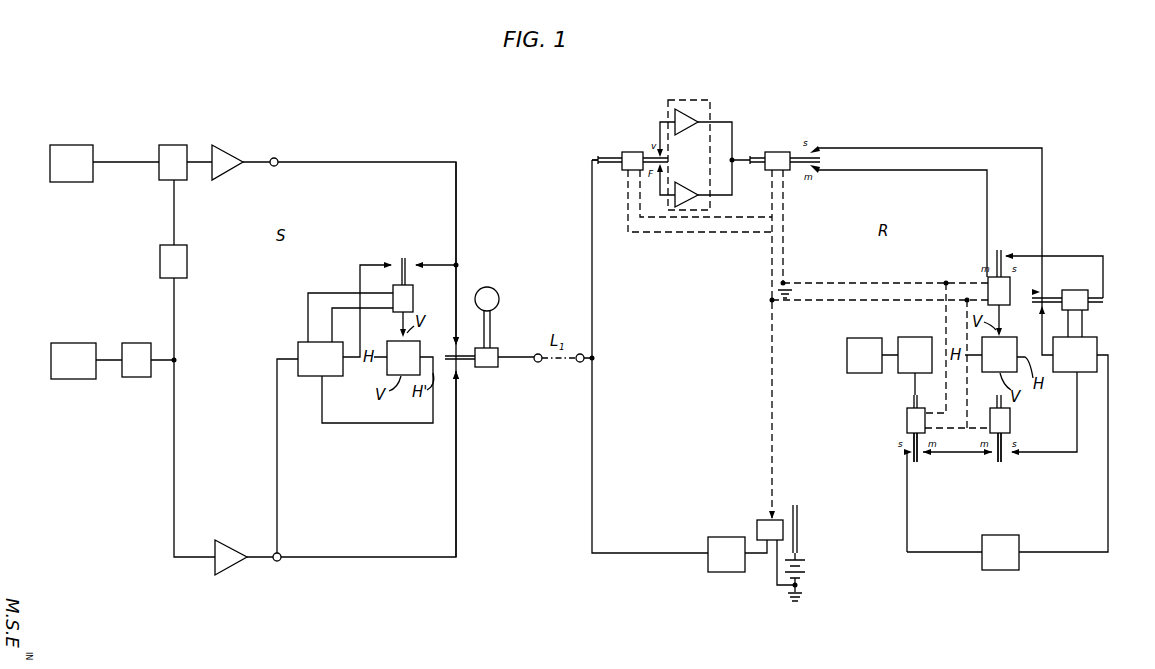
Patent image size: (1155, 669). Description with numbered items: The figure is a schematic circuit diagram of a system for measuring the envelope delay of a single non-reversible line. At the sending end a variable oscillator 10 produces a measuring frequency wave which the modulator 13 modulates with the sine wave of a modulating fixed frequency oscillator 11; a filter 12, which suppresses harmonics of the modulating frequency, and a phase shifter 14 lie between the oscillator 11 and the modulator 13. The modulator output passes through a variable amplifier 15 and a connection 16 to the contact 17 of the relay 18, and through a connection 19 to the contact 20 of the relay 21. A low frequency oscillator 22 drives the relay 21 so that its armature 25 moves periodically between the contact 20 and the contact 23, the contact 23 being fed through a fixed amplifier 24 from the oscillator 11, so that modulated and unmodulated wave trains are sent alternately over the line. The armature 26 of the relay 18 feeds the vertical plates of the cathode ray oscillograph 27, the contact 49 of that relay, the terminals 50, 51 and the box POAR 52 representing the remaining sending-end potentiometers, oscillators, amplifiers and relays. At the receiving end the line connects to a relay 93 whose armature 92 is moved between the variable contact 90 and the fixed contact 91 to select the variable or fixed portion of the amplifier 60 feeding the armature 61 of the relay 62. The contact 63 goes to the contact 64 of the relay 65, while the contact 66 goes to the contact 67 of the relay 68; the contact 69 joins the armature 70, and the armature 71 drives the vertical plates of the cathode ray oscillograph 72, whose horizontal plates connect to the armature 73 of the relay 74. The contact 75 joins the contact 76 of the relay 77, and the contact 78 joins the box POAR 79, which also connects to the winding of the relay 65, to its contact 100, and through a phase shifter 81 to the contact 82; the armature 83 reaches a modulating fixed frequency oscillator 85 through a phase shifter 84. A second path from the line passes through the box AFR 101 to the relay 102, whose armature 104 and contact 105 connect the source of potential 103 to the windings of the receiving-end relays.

The variable oscillator 10 is at (56, 145).
The modulating fixed frequency oscillator 11 is at (66, 343).
The filter 12 is at (128, 343).
The modulator 13 is at (164, 145).
The phase shifter 14 is at (188, 256).
The variable amplifier 15 is at (222, 148).
The connection 16 is at (436, 264).
The contact of relay 18 17 is at (417, 269).
The relay 18 is at (414, 299).
The connection 19 is at (457, 284).
The contact of relay 21 20 is at (457, 338).
The relay 21 is at (489, 368).
The oscillator 22 is at (489, 287).
The contact of relay 21 23 is at (458, 374).
The fixed amplifier 24 is at (228, 546).
The armature of relay 21 25 is at (447, 356).
The armature of relay 18 26 is at (404, 258).
The cathode ray oscillograph 27 is at (393, 341).
The contact of relay 18 49 is at (391, 263).
The terminal 50 is at (276, 158).
The terminal 51 is at (280, 561).
The box POAR 52 is at (299, 343).
The amplifier 60 is at (688, 100).
The armature of relay 62 61 is at (797, 155).
The relay 62 is at (776, 151).
The contact of relay 62 63 is at (822, 143).
The contact of relay 65 64 is at (1032, 292).
The relay 65 is at (1072, 290).
The contact of relay 62 66 is at (814, 172).
The contact of relay 68 67 is at (989, 256).
The relay 68 is at (988, 278).
The contact of relay 68 69 is at (1007, 254).
The armature of relay 65 70 is at (1050, 296).
The armature of relay 68 71 is at (1001, 251).
The cathode ray oscillograph 72 is at (983, 372).
The armature of relay 74 73 is at (1000, 464).
The relay 74 is at (1011, 415).
The contact of relay 74 75 is at (990, 455).
The contact of relay 77 76 is at (926, 455).
The relay 77 is at (906, 420).
The contact of relay 74 78 is at (1010, 456).
The box POAR 79 is at (1098, 345).
The phase shifter 81 is at (1020, 540).
The contact of relay 77 82 is at (905, 453).
The armature of relay 77 83 is at (919, 463).
The phase shifter 84 is at (906, 337).
The modulating fixed frequency oscillator 85 is at (857, 338).
The variable contact 90 is at (663, 153).
The fixed contact 91 is at (663, 167).
The armature of relay 93 92 is at (648, 151).
The relay 93 is at (624, 151).
The contact of relay 65 100 is at (1041, 310).
The box AFR 101 is at (732, 566).
The relay 102 is at (770, 519).
The source of potential 103 is at (808, 568).
The armature of relay 102 104 is at (800, 515).
The contact of relay 102 105 is at (778, 515).